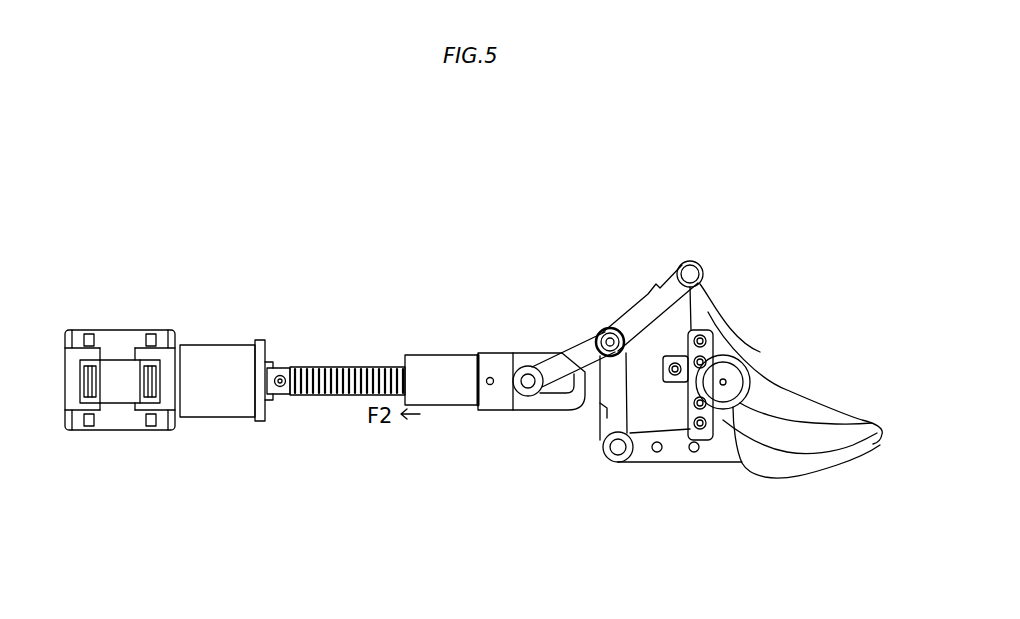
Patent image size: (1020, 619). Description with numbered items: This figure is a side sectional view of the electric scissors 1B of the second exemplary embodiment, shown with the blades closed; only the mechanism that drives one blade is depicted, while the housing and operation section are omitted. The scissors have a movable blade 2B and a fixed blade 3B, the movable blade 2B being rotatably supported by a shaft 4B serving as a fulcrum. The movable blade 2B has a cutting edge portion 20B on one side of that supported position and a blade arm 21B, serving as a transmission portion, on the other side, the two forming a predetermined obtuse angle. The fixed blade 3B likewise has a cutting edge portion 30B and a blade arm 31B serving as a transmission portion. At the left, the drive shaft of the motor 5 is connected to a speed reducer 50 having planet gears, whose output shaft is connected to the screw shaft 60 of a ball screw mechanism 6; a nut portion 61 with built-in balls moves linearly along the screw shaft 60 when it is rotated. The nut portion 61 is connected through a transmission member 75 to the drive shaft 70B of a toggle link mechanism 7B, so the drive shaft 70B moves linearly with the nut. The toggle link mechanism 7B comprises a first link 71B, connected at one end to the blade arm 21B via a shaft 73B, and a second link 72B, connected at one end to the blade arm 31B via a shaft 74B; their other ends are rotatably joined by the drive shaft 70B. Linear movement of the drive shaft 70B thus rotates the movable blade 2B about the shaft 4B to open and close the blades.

The electric scissors 1B is at (112, 361).
The motor 5 is at (128, 418).
The speed reducer 50 is at (220, 355).
The ball screw mechanism 6 is at (437, 326).
The screw shaft 60 is at (340, 400).
The nut portion 61 is at (424, 370).
The transmission member 75 is at (563, 362).
The drive shaft 70B is at (597, 333).
The toggle link mechanism 7B is at (640, 335).
The first link 71B is at (650, 290).
The shaft 73B is at (690, 274).
The second link 72B is at (586, 440).
The shaft 74B is at (618, 456).
The blade arm 31B is at (680, 450).
The movable blade 2B is at (786, 378).
The blade arm 21B is at (725, 290).
The shaft 4B is at (724, 386).
The cutting edge portion 20B is at (799, 369).
The fixed blade 3B is at (813, 507).
The cutting edge portion 30B is at (852, 455).